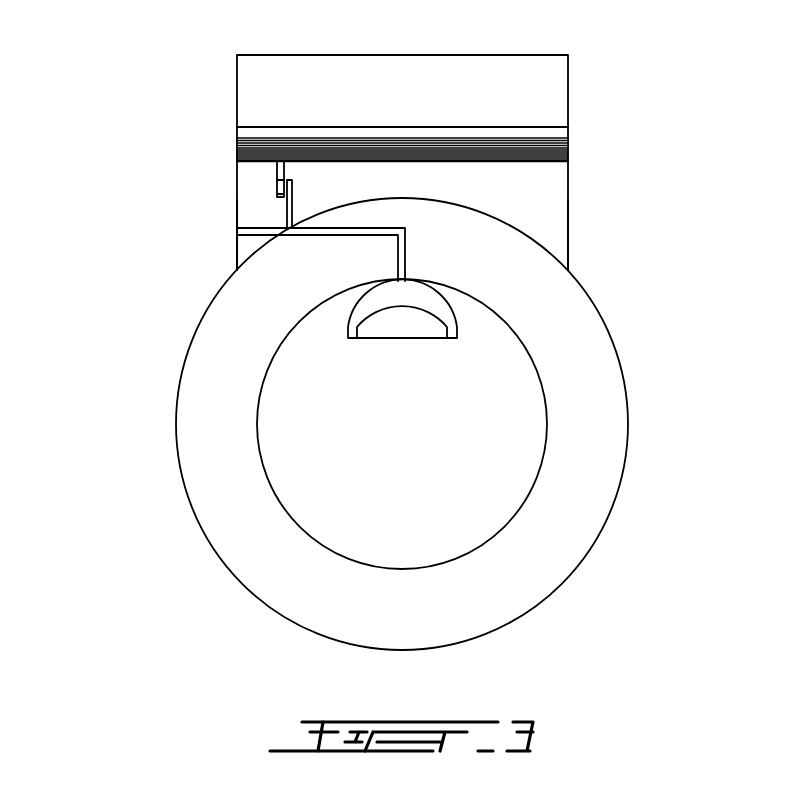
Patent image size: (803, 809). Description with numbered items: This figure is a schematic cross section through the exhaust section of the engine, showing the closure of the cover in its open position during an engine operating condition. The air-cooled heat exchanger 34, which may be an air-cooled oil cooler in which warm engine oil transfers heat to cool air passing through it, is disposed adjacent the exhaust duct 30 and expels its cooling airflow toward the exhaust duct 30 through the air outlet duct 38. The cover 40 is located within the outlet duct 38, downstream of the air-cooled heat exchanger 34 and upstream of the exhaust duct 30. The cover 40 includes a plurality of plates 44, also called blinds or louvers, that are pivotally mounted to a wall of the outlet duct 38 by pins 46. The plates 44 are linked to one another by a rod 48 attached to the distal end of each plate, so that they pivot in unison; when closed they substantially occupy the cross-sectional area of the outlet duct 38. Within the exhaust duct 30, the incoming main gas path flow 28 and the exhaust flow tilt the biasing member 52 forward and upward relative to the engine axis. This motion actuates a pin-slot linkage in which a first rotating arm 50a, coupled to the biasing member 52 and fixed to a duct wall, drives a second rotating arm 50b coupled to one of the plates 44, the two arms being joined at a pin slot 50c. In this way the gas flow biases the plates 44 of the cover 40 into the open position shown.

The main gas path flow 28 is at (292, 444).
The exhaust duct 30 is at (270, 524).
The air-cooled heat exchanger 34 is at (577, 80).
The air outlet duct 38 is at (588, 200).
The cover 40 is at (223, 136).
The plates 44 is at (568, 144).
The pins 46 is at (568, 147).
The rod 48 is at (237, 155).
The first rotating arm 50a is at (257, 233).
The second rotating arm 50b is at (277, 180).
The pin slot 50c is at (278, 193).
The biasing member 52 is at (442, 312).